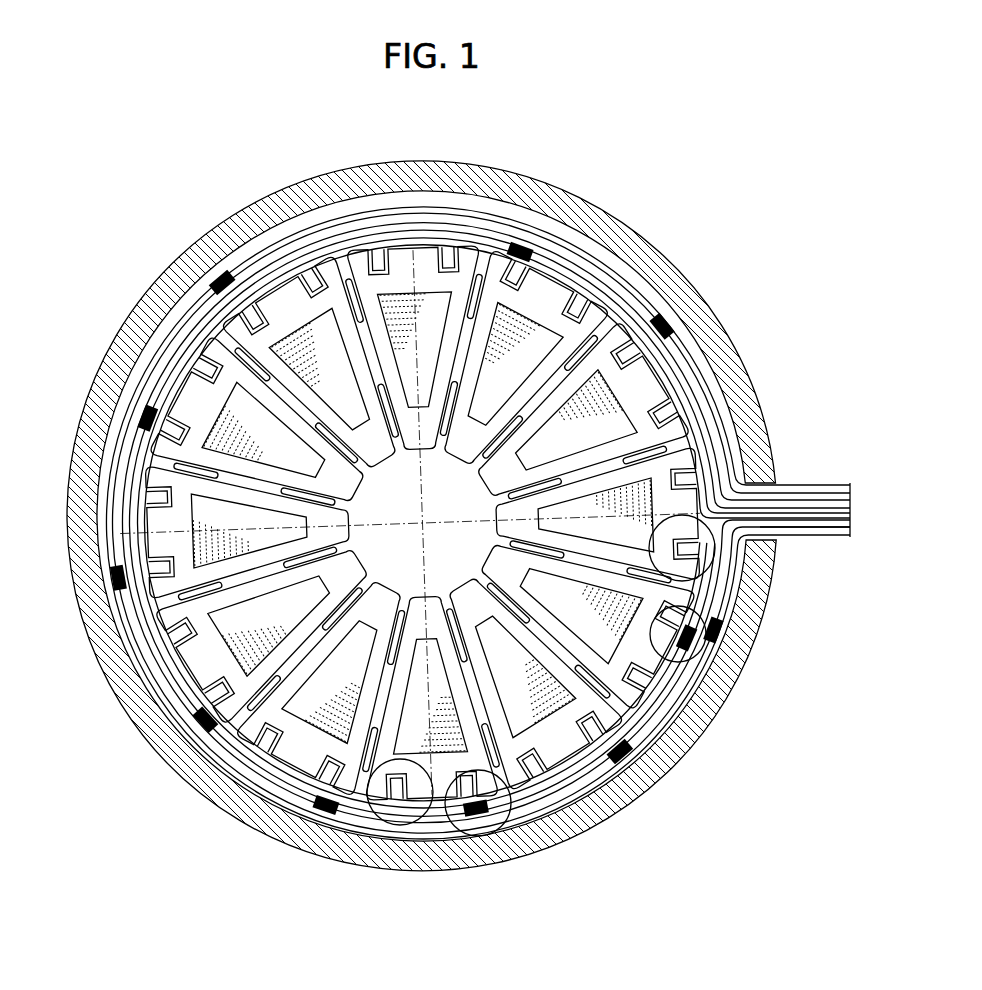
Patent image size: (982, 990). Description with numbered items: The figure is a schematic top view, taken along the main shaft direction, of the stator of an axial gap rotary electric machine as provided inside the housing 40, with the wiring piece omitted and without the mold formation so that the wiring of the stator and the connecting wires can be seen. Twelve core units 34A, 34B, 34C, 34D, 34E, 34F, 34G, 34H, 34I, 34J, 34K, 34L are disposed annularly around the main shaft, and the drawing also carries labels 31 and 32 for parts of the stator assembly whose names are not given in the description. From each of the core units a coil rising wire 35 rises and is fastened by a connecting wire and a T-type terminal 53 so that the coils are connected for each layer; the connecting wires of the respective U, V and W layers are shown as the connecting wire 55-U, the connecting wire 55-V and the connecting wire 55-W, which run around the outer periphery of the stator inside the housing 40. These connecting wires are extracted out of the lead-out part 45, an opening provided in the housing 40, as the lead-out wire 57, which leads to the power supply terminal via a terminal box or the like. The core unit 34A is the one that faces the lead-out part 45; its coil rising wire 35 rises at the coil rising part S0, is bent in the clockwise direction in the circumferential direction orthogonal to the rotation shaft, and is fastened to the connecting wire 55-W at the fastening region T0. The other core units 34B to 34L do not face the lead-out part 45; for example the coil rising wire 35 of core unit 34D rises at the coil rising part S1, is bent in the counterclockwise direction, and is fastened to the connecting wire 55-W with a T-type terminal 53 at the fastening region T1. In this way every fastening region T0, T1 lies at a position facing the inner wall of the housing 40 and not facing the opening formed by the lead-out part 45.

The stator core 31 is at (390, 293).
The insulator 32 is at (622, 292).
The core unit 34A is at (596, 517).
The core unit 34B is at (576, 605).
The core unit 34C is at (514, 671).
The core unit 34D is at (429, 697).
The core unit 34E is at (341, 677).
The core unit 34F is at (275, 615).
The core unit 34G is at (247, 529).
The core unit 34H is at (268, 441).
The core unit 34I is at (329, 375).
The core unit 34J is at (417, 348).
The core unit 34K is at (505, 369).
The core unit 34L is at (571, 430).
The coil rising wire 35 is at (448, 240).
The housing 40 is at (742, 325).
The lead-out part 45 is at (780, 484).
The T-type terminal 53 is at (222, 278).
The connecting wire 55-U is at (183, 714).
The connecting wire 55-V is at (223, 743).
The connecting wire 55-W is at (268, 770).
The lead-out wire 57 is at (804, 540).
The coil rising part S0 is at (708, 583).
The coil rising part S1 is at (403, 816).
The fastening region T0 is at (690, 665).
The fastening region T1 is at (480, 833).